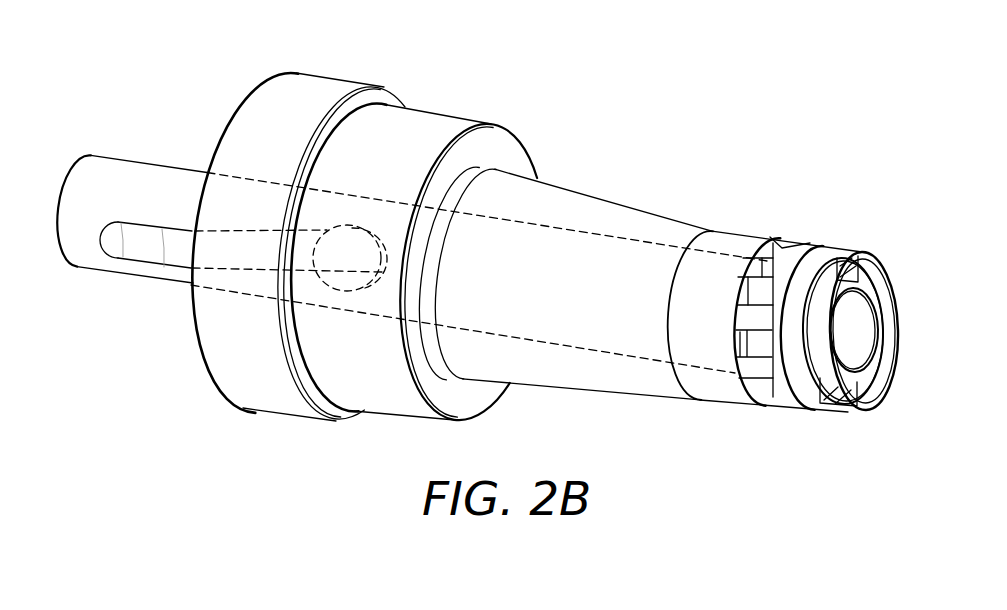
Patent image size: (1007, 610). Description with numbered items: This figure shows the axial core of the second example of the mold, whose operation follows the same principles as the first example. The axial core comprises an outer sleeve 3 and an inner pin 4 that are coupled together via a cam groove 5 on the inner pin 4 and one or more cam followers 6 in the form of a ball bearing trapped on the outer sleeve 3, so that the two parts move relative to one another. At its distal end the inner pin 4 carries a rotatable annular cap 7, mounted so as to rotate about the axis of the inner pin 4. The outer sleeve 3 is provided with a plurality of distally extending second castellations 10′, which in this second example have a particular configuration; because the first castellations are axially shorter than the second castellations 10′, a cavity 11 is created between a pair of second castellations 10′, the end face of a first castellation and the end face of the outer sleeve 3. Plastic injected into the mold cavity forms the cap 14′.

The outer sleeve 3 is at (427, 123).
The inner pin 4 is at (597, 203).
The cam groove 5 is at (134, 256).
The cam follower 6 is at (340, 293).
The rotatable annular cap 7 is at (797, 392).
The second castellations 10′ is at (757, 313).
The cavity 11 is at (738, 342).
The cap 14′ is at (882, 265).